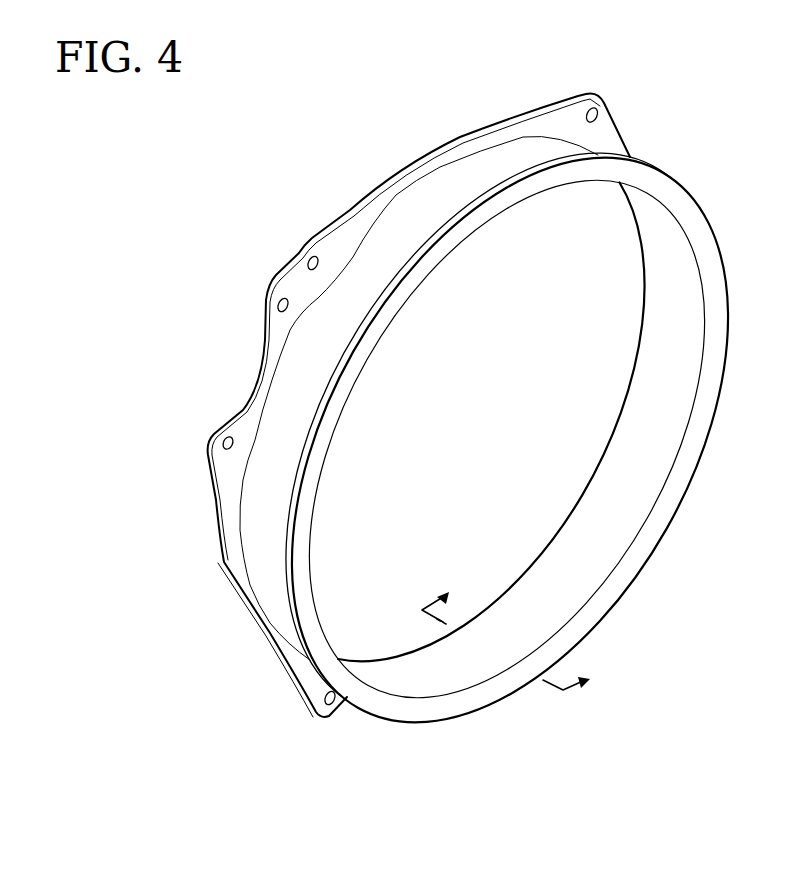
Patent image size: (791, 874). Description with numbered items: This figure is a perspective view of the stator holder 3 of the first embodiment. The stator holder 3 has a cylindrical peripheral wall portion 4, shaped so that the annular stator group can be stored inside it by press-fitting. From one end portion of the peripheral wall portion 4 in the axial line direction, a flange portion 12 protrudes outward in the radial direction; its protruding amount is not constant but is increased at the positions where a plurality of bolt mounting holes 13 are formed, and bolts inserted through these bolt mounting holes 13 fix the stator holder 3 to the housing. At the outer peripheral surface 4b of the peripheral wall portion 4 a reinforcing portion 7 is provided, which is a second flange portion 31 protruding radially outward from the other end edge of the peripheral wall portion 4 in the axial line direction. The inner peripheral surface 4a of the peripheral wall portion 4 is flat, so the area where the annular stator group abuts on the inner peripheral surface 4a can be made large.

The stator holder 3 is at (473, 82).
The cylindrical peripheral wall portion 4 is at (428, 187).
The inner peripheral surface 4a is at (549, 562).
The outer peripheral surface 4b is at (397, 237).
The reinforcing portion 7 is at (496, 439).
The second flange portion 31 is at (483, 697).
The flange portion 12 is at (227, 480).
The bolt mounting holes 13 is at (316, 257).